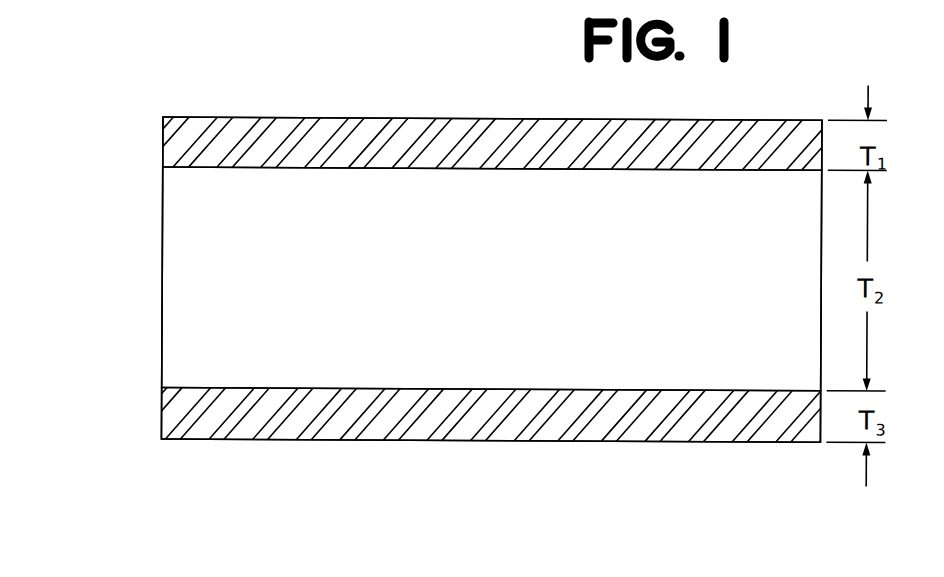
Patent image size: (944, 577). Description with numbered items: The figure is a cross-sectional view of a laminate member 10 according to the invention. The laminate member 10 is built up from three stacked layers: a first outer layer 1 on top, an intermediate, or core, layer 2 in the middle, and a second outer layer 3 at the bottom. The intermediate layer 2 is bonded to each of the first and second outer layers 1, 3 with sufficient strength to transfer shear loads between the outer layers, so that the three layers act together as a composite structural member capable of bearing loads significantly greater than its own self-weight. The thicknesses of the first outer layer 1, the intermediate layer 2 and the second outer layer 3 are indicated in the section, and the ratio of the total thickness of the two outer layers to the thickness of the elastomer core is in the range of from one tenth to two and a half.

The laminate member 10 is at (308, 117).
The first outer layer 1 is at (163, 154).
The intermediate layer 2 is at (163, 223).
The second outer layer 3 is at (163, 403).